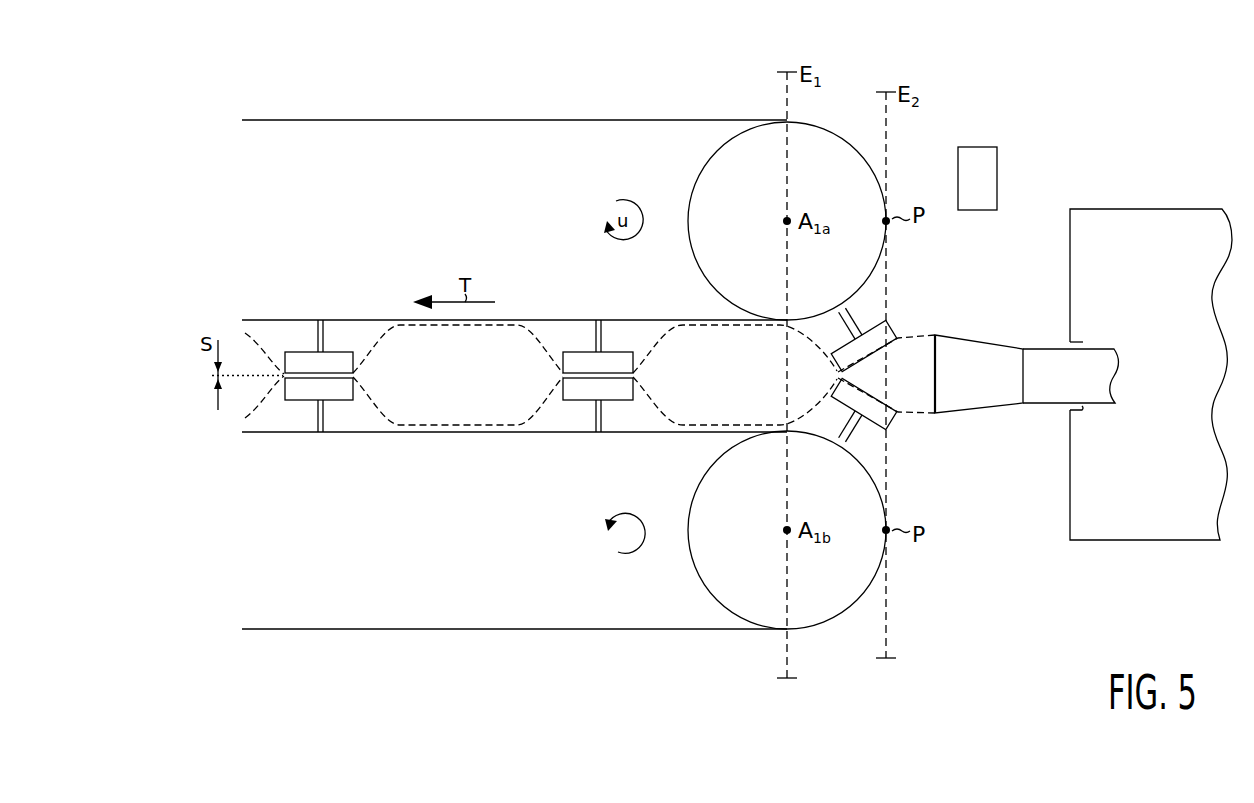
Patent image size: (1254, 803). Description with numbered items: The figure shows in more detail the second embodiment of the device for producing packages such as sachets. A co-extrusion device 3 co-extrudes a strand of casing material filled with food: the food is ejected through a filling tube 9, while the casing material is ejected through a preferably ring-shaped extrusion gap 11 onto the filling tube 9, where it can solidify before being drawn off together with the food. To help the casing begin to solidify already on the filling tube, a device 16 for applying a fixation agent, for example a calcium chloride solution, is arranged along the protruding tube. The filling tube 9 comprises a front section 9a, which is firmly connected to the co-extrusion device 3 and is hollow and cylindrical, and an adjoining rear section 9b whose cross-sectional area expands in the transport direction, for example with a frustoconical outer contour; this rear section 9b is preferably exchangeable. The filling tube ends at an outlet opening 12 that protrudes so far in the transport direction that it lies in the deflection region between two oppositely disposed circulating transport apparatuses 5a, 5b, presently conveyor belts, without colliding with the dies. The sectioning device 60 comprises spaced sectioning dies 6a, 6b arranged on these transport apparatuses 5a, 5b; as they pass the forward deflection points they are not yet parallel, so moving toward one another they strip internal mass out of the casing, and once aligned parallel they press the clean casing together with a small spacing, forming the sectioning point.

The co-extrusion device 3 is at (1192, 202).
The circulating transport apparatus 5a is at (642, 120).
The circulating transport apparatus 5b is at (645, 630).
The sectioning die 6a is at (836, 326).
The sectioning die 6b is at (897, 401).
The filling tube 9 is at (1027, 372).
The front section of filling tube 9a is at (1048, 404).
The rear section of filling tube 9b is at (985, 408).
The extrusion gap 11 is at (1058, 337).
The outlet opening 12 is at (935, 326).
The device for applying a fixation agent 16 is at (997, 171).
The sectioning device 60 is at (848, 95).